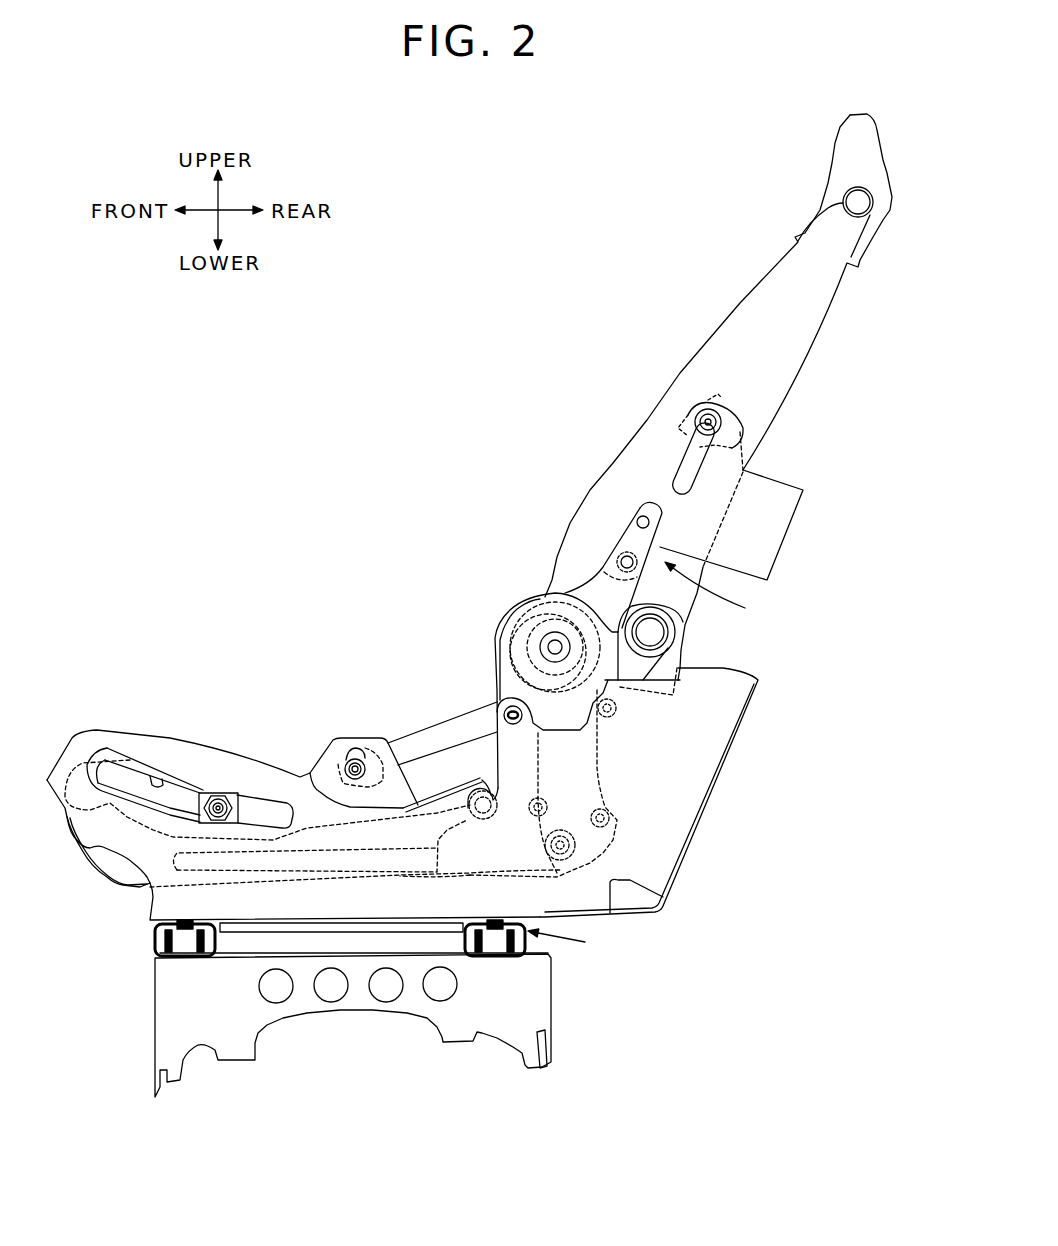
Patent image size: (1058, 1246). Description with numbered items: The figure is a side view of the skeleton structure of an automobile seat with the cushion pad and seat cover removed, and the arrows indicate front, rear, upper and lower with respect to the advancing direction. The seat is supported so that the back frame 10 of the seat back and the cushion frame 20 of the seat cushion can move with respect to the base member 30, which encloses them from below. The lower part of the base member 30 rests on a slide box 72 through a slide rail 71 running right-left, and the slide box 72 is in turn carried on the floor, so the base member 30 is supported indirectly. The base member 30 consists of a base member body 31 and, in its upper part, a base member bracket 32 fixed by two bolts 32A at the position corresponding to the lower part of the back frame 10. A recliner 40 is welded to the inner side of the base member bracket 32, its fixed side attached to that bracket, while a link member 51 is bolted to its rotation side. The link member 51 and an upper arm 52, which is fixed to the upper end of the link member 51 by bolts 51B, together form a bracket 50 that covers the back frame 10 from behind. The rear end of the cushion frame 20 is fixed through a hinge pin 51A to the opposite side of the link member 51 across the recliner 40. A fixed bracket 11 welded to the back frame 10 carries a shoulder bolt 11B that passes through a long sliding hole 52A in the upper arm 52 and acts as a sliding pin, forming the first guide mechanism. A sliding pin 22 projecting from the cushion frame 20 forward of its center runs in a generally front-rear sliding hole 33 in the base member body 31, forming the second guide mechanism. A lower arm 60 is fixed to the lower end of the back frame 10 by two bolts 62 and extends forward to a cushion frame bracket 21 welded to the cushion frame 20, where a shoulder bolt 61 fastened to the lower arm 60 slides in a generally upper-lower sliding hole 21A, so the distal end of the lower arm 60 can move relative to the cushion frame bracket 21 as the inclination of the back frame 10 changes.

The back frame 10 is at (682, 375).
The fixed bracket 11 is at (688, 413).
The shoulder bolt 11B is at (725, 407).
The sliding hole 52A is at (697, 453).
The bolt 51B is at (620, 562).
The upper arm 52 is at (770, 530).
The bracket 50 is at (722, 592).
The bolt 62 is at (553, 643).
The recliner 40 is at (502, 628).
The lower arm 60 is at (420, 740).
The base member bracket 32 is at (497, 690).
The bolt 32A is at (500, 708).
The cushion frame bracket 21 is at (367, 740).
The sliding hole 21A is at (347, 763).
The shoulder bolt 61 is at (343, 765).
The base member 30 is at (725, 775).
The sliding hole 33 is at (150, 778).
The sliding pin 22 is at (222, 797).
The base member body 31 is at (728, 693).
The link member 51 is at (585, 772).
The cushion frame 20 is at (607, 847).
The hinge pin 51A is at (587, 860).
The slide rail 71 is at (385, 938).
The slide box 72 is at (552, 993).